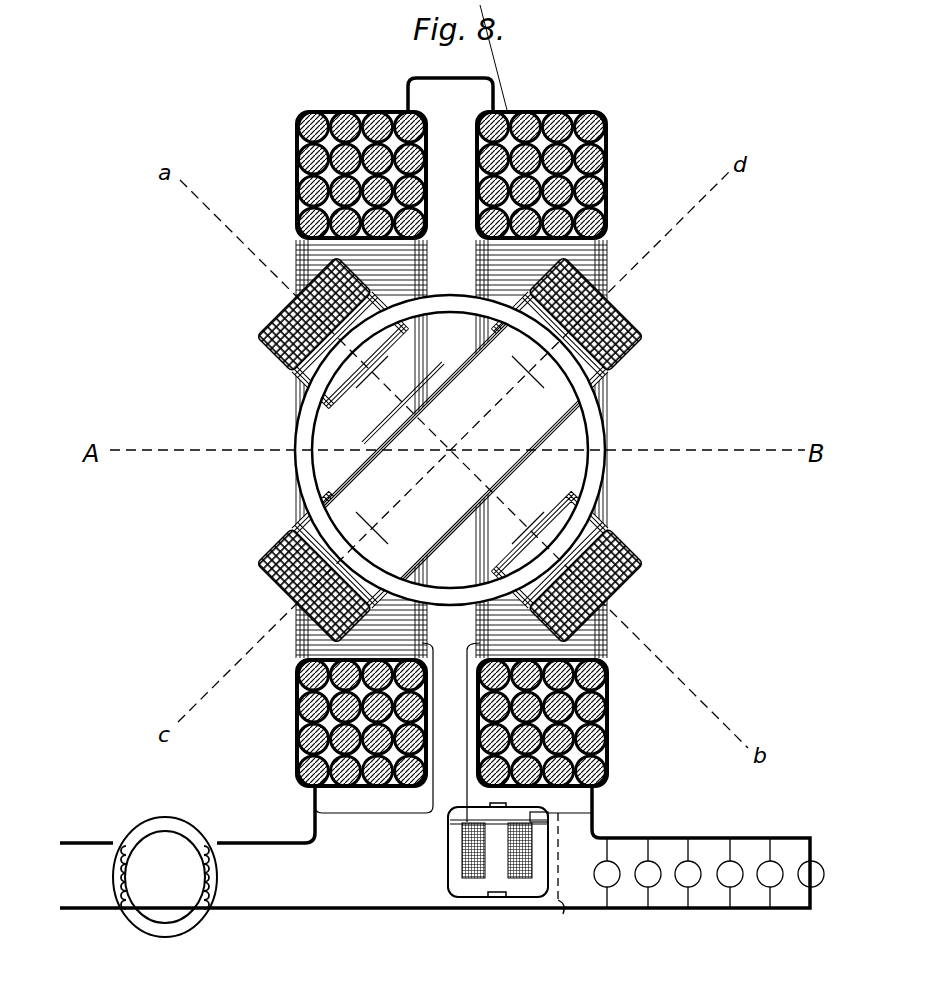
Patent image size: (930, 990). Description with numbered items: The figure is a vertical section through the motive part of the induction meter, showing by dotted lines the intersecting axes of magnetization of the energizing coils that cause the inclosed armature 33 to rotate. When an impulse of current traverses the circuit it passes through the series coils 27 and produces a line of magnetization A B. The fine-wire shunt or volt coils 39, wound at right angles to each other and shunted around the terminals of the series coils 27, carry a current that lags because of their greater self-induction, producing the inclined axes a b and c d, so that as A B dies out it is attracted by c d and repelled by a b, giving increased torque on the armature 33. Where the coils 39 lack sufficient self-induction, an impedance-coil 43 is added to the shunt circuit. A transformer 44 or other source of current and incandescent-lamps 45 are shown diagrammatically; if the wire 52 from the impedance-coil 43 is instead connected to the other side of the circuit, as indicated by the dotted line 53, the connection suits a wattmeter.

The series coils 27 is at (295, 750).
The armature ring 33 is at (593, 412).
The shunt or volt coils 39 is at (282, 352).
The impedance-coil 43 is at (463, 851).
The transformer 44 is at (165, 877).
The incandescent-lamps 45 is at (709, 858).
The wire 52 is at (578, 813).
The dotted line 53 is at (557, 876).